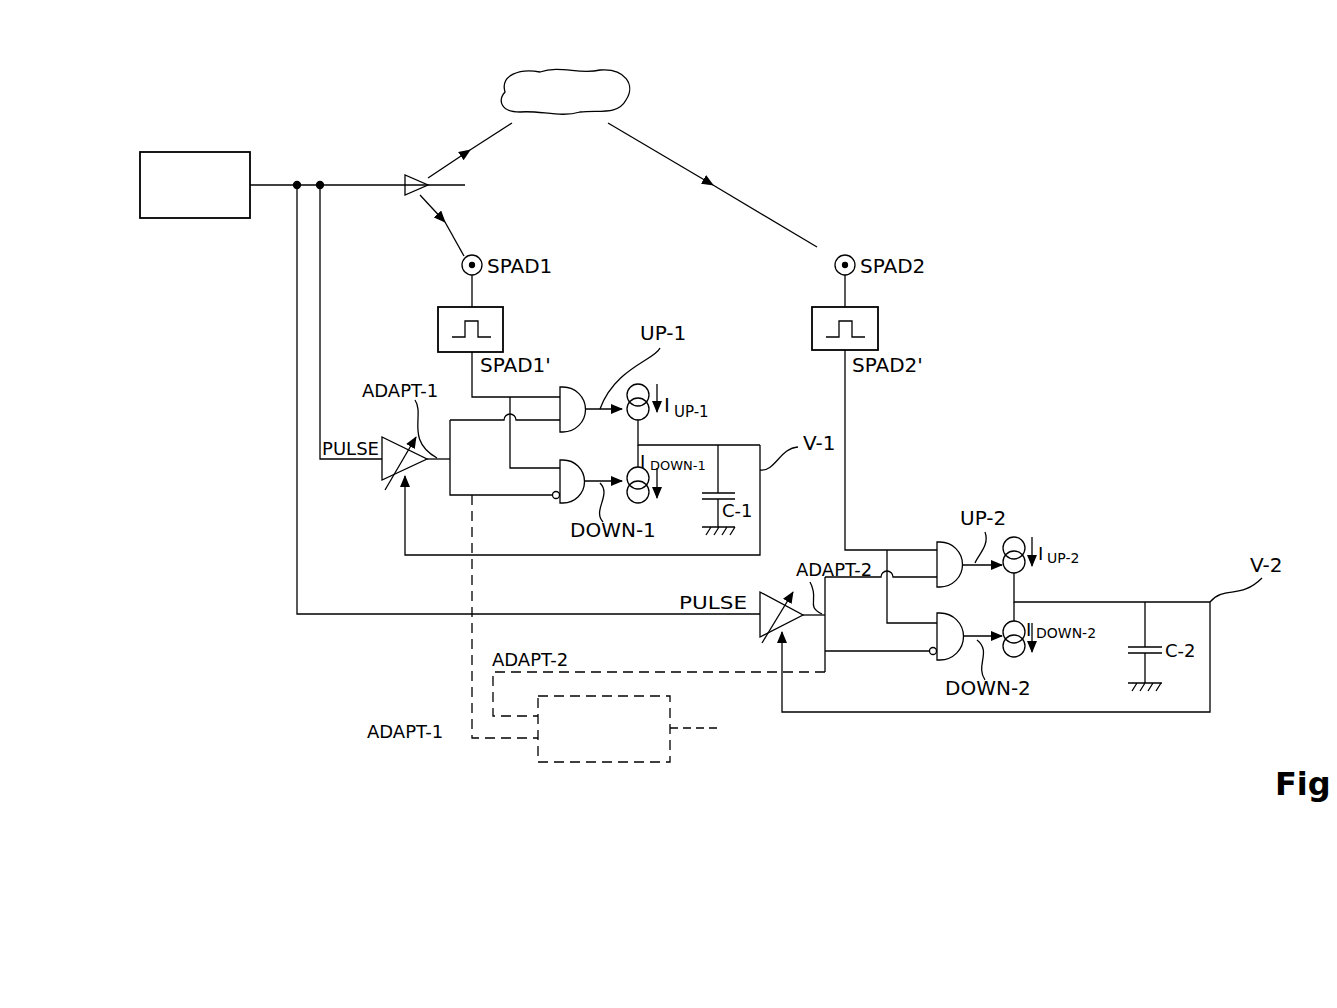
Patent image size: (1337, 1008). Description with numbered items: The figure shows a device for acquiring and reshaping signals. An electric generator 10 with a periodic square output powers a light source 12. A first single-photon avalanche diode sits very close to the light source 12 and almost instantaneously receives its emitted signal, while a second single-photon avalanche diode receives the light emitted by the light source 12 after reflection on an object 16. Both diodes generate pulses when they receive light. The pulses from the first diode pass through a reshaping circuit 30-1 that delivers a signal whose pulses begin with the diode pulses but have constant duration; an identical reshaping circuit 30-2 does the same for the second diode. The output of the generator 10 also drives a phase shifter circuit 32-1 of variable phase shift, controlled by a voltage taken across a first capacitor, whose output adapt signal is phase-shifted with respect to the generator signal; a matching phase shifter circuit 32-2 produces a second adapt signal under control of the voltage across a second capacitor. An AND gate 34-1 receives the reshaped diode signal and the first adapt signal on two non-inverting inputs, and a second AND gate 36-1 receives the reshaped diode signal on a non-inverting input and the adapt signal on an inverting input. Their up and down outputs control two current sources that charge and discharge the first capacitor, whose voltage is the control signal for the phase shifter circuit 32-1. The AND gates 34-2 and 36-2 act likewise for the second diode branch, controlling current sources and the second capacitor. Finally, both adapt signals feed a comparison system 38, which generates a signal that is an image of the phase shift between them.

The electric generator 10 is at (215, 152).
The light source 12 is at (418, 178).
The object 16 is at (620, 74).
The reshaping circuit 30-1 is at (503, 318).
The reshaping circuit 30-2 is at (873, 305).
The phase shifter circuit of variable phase shift 32-1 is at (384, 438).
The phase shifter circuit of variable phase shift 32-2 is at (777, 596).
The AND gate 34-1 is at (583, 390).
The AND gate 34-2 is at (945, 545).
The second AND gate 36-1 is at (555, 503).
The second AND gate 36-2 is at (940, 660).
The comparison system 38 is at (600, 762).